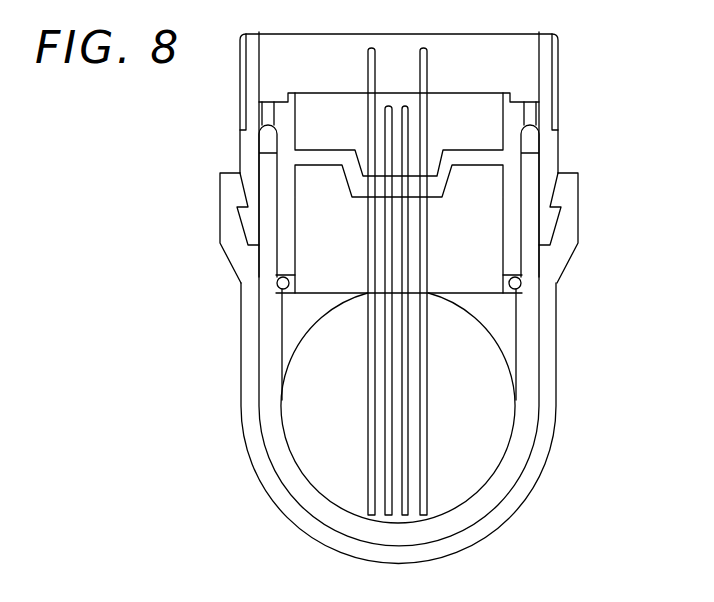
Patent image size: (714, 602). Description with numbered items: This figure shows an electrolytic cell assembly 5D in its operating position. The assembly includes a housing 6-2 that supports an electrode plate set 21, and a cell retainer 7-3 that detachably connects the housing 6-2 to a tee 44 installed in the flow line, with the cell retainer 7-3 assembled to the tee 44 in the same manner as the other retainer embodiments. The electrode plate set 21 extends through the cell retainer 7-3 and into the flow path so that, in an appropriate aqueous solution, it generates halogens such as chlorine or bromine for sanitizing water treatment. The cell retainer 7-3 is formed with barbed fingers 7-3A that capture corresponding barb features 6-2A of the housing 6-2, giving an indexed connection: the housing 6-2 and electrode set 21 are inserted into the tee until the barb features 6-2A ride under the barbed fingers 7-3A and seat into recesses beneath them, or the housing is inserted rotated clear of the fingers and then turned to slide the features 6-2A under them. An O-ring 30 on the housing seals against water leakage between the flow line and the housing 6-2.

The electrolytic cell assembly 5D is at (581, 89).
The housing 6-2 is at (240, 90).
The barbed fingers 7-3A is at (235, 192).
The barb features 6-2A is at (257, 232).
The cell retainer 7-3 is at (248, 423).
The O-ring 30 is at (523, 278).
The tee 44 is at (283, 461).
The electrode plate set 21 is at (430, 432).